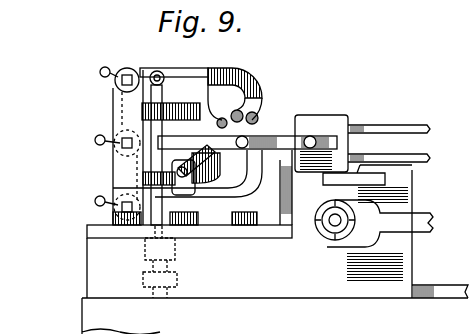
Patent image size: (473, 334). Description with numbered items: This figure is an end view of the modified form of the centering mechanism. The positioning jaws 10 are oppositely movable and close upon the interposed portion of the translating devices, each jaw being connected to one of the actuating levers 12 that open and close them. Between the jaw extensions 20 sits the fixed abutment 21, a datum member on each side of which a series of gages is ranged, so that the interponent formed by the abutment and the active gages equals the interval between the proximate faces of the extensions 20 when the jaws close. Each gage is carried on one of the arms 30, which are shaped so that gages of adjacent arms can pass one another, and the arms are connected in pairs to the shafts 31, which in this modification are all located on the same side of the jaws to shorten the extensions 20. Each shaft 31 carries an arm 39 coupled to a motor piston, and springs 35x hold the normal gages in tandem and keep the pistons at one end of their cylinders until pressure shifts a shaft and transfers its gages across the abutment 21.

The positioning jaws 10 is at (314, 120).
The actuating levers 12 is at (433, 138).
The jaw extensions 20 is at (285, 148).
The fixed abutment 21 is at (242, 192).
The arms 30 is at (212, 66).
The shafts 31 is at (121, 141).
The arm on shaft 39 is at (165, 61).
The springs 35x is at (146, 250).